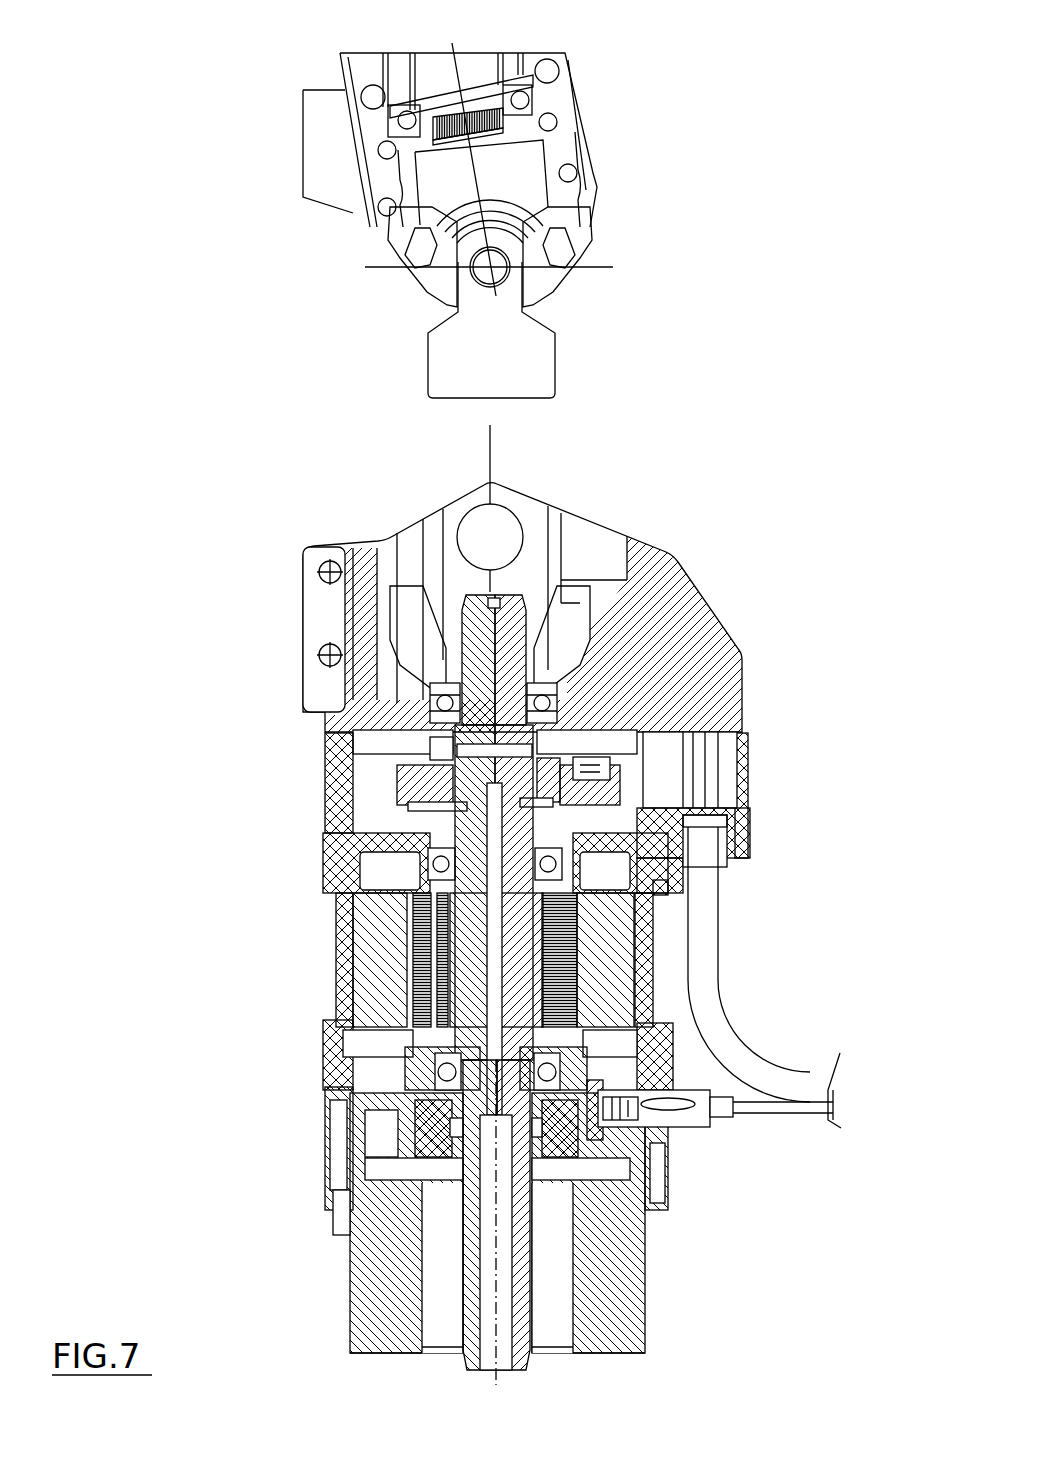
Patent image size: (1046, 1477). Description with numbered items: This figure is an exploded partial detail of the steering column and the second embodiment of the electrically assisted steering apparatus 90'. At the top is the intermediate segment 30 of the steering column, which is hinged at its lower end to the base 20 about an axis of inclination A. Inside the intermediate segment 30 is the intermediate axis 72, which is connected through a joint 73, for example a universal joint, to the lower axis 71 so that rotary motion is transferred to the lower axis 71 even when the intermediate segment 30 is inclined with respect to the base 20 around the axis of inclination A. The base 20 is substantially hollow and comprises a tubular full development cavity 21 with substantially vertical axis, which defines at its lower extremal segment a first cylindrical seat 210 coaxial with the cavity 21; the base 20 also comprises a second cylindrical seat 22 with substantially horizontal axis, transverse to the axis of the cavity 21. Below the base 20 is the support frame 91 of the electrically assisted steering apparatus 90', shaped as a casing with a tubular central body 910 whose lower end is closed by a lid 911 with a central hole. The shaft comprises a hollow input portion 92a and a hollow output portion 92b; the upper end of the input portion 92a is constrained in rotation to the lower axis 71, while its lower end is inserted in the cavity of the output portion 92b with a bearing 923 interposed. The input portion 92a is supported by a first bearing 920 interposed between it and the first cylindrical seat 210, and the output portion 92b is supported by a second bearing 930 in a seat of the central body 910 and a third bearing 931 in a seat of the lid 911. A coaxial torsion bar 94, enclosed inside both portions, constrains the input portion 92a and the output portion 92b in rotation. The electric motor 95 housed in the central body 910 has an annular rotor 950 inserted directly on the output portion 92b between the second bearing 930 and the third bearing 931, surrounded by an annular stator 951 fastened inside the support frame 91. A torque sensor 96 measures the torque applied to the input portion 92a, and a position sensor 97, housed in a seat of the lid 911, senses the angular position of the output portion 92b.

The intermediate segment 30 is at (584, 108).
The intermediate axis 72 is at (455, 103).
The joint 73 is at (477, 247).
The lower axis 71 is at (505, 343).
The axis of inclination A is at (500, 250).
The base 20 is at (386, 529).
The full development cavity 21 is at (433, 570).
The second cylindrical seat 22 is at (523, 530).
The first cylindrical seat 210 is at (433, 690).
The input portion 92a is at (503, 667).
The first bearing 920 is at (550, 697).
The second bearing 930 is at (433, 832).
The torque sensor 96 is at (697, 750).
The central body 910 is at (355, 812).
The support frame 91 is at (318, 857).
The electric motor 95 is at (355, 942).
The annular stator 951 is at (377, 973).
The annular rotor 950 is at (420, 990).
The bearing 923 is at (587, 903).
The torsion bar 94 is at (497, 995).
The electrically assisted steering apparatus 90' is at (414, 1191).
The lid 911 is at (353, 1117).
The position sensor 97 is at (352, 1207).
The third bearing 931 is at (583, 1075).
The output portion 92b is at (527, 1240).